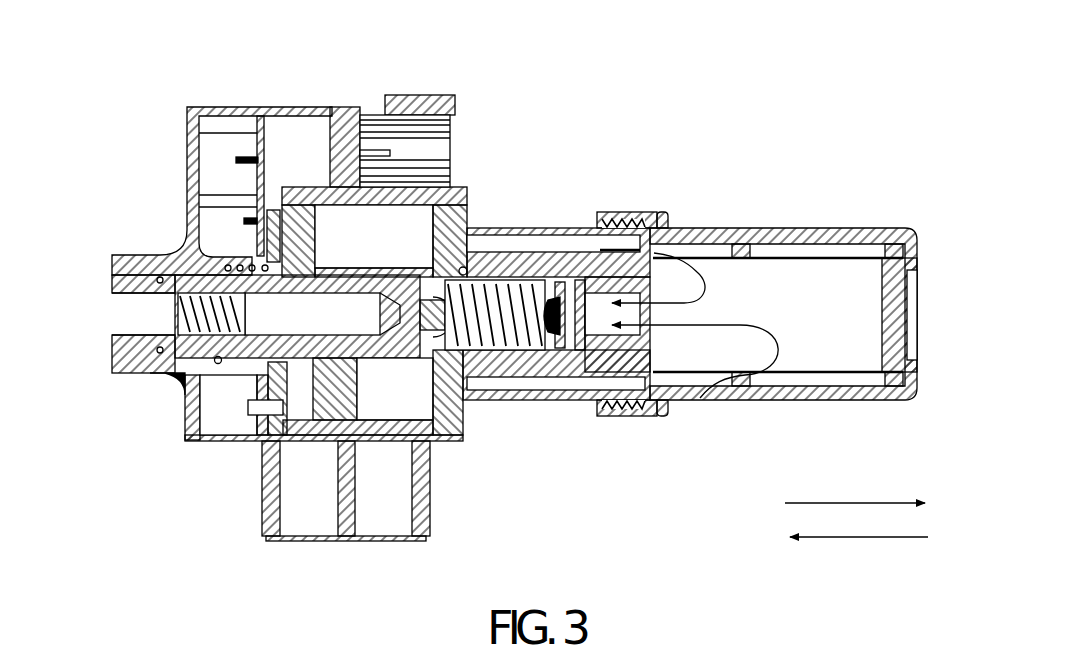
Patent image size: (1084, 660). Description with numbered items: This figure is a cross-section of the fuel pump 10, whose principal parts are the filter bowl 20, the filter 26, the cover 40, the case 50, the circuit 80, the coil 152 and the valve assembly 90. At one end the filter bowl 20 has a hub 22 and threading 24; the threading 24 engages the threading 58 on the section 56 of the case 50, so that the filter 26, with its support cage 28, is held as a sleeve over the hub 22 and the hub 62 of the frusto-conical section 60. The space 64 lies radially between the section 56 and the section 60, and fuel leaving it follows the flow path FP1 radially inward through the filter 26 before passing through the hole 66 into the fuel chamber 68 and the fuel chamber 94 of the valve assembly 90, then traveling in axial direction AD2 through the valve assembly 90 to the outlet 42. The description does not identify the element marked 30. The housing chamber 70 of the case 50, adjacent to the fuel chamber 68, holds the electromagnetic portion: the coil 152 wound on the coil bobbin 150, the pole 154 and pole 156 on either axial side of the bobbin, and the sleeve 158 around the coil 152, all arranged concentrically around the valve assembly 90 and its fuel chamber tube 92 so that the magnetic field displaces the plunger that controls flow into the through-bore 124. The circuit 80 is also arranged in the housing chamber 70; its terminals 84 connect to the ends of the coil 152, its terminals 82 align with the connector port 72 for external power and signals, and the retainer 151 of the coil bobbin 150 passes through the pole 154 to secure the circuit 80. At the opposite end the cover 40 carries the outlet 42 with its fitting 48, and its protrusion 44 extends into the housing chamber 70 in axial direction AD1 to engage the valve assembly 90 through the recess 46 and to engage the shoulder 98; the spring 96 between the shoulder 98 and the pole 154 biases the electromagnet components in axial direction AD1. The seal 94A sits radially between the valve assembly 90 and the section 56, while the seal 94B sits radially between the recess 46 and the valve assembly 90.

The fuel pump 10 is at (838, 79).
The filter bowl 20 is at (866, 240).
The hub 22 is at (895, 270).
The threading 24 is at (625, 215).
The filter 26 is at (772, 258).
The support cage 28 is at (750, 380).
The flange 30 is at (661, 214).
The cover 40 is at (196, 161).
The outlet 42 is at (106, 315).
The protrusion 44 is at (236, 375).
The recess 46 is at (172, 272).
The fitting 48 is at (108, 285).
The case 50 is at (210, 443).
The section 56 is at (508, 226).
The threading 58 is at (608, 215).
The section 60 is at (470, 251).
The hub 62 is at (605, 277).
The space 64 is at (513, 366).
The hole 66 is at (640, 342).
The fuel chamber 68 is at (490, 392).
The housing chamber 70 is at (224, 410).
The connector port 72 is at (460, 125).
The circuit 80 is at (258, 116).
The terminal 82 is at (238, 160).
The terminal 84 is at (250, 221).
The valve assembly 90 is at (470, 366).
The fuel chamber tube 92 is at (525, 348).
The fuel chamber 94 is at (568, 366).
The seal 94A is at (463, 268).
The seal 94B is at (214, 361).
The spring 96 is at (188, 441).
The shoulder 98 is at (240, 265).
The through-bore 124 is at (398, 405).
The coil bobbin 150 is at (368, 320).
The retainer 151 is at (277, 432).
The coil 152 is at (380, 226).
The pole 154 is at (250, 364).
The pole 156 is at (438, 443).
The sleeve 158 is at (320, 203).
The flow path FP1 is at (784, 349).
The axial direction AD1 is at (838, 502).
The axial direction AD2 is at (868, 538).